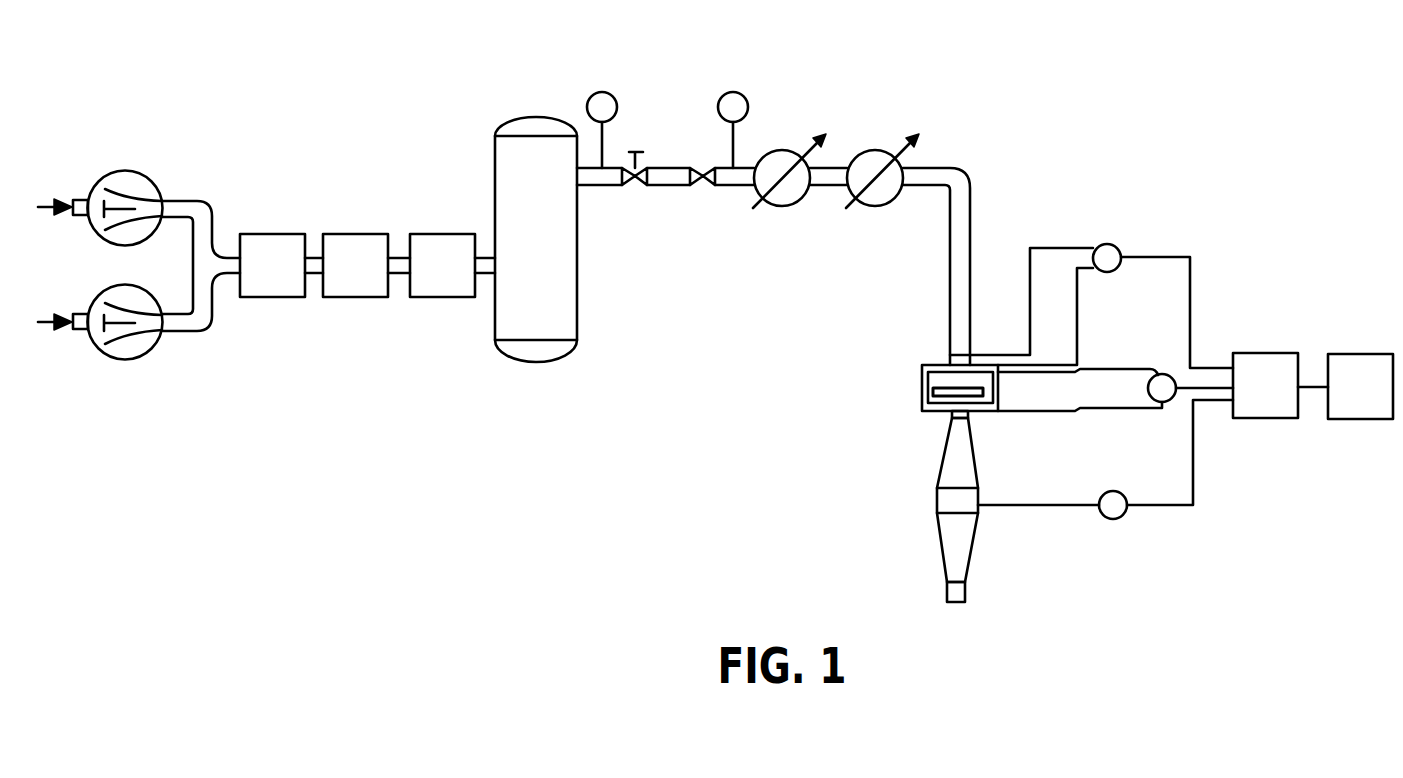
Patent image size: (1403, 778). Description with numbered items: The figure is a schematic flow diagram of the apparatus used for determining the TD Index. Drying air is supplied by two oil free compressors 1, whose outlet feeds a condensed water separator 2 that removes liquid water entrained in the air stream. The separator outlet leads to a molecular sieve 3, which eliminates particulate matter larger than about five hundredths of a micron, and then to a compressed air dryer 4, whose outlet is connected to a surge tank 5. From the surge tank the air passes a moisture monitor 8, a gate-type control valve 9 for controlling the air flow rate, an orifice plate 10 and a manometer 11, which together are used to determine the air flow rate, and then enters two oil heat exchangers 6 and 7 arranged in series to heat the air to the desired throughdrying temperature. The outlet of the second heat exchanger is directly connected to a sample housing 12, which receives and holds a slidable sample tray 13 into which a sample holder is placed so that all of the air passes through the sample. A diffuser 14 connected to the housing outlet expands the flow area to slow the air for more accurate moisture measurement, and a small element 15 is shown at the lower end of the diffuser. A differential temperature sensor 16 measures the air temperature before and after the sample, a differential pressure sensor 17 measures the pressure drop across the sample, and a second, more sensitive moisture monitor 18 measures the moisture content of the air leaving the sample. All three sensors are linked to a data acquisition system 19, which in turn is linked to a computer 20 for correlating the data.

The oil free compressors 1 is at (128, 170).
The condensed water separator 2 is at (258, 232).
The molecular sieve 3 is at (347, 232).
The compressed air dryer 4 is at (443, 232).
The surge tank 5 is at (555, 265).
The oil heat exchanger 6 is at (778, 208).
The oil heat exchanger 7 is at (862, 208).
The moisture monitor 8 is at (602, 92).
The gate-type control valve 9 is at (640, 187).
The orifice plate 10 is at (700, 187).
The manometer 11 is at (733, 92).
The sample housing 12 is at (913, 395).
The slidable sample tray 13 is at (940, 386).
The diffuser 14 is at (958, 465).
The collector cup 15 is at (957, 592).
The differential temperature sensor 16 is at (1107, 244).
The differential pressure sensor 17 is at (1170, 374).
The second moisture monitor 18 is at (1110, 491).
The data acquisition system 19 is at (1257, 348).
The computer 20 is at (1347, 352).